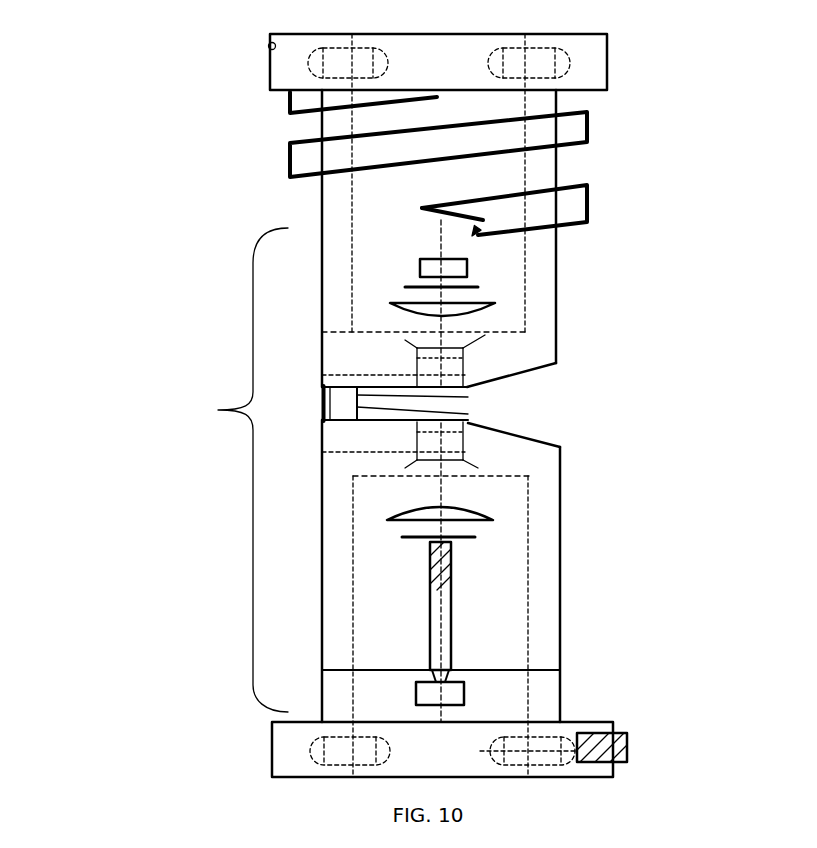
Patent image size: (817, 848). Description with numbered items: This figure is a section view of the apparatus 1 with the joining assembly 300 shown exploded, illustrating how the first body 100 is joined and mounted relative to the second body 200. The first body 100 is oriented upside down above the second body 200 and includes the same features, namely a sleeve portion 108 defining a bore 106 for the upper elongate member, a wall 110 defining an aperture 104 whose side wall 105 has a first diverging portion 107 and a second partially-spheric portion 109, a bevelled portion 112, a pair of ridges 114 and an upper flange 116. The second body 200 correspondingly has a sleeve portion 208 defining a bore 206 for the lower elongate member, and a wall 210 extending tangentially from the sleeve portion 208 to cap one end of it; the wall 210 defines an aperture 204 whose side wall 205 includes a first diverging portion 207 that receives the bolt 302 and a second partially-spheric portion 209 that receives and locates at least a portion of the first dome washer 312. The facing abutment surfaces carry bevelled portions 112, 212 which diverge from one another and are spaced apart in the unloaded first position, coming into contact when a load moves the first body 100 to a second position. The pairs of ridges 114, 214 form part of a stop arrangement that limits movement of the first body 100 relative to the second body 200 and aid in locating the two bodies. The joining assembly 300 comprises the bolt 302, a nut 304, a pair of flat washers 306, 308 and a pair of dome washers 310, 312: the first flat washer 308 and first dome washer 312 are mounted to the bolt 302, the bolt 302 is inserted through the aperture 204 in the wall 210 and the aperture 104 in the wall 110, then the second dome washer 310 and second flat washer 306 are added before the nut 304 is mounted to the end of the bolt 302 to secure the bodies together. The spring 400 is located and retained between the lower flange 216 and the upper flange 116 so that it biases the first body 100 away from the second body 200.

The apparatus 1 is at (95, 92).
The first body 100 is at (540, 297).
The aperture 104 is at (428, 332).
The side wall 105 is at (417, 358).
The bore 106 is at (513, 302).
The first diverging portion 107 is at (322, 376).
The sleeve portion 108 is at (540, 175).
The second partially-spheric portion 109 is at (322, 332).
The wall 110 is at (490, 373).
The bevelled portion 112 is at (488, 372).
The pair of ridges 114 is at (468, 397).
The upper flange 116 is at (582, 63).
The second body 200 is at (540, 655).
The aperture 204 is at (428, 477).
The side wall 205 is at (322, 452).
The bore 206 is at (498, 627).
The first diverging portion 207 is at (415, 426).
The sleeve portion 208 is at (547, 527).
The second partially-spheric portion 209 is at (353, 477).
The wall 210 is at (505, 455).
The bevelled portion 212 is at (520, 436).
The pair of ridges 214 is at (468, 414).
The lower flange 216 is at (575, 767).
The joining assembly 300 is at (230, 470).
The bolt 302 is at (448, 588).
The nut 304 is at (467, 267).
The second flat washer 306 is at (480, 287).
The first flat washer 308 is at (473, 537).
The second dome washer 310 is at (430, 303).
The first dome washer 312 is at (487, 513).
The spring 400 is at (584, 198).